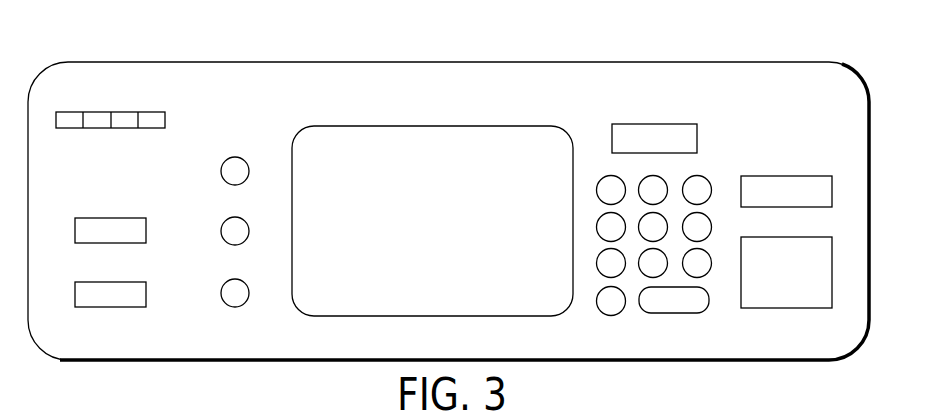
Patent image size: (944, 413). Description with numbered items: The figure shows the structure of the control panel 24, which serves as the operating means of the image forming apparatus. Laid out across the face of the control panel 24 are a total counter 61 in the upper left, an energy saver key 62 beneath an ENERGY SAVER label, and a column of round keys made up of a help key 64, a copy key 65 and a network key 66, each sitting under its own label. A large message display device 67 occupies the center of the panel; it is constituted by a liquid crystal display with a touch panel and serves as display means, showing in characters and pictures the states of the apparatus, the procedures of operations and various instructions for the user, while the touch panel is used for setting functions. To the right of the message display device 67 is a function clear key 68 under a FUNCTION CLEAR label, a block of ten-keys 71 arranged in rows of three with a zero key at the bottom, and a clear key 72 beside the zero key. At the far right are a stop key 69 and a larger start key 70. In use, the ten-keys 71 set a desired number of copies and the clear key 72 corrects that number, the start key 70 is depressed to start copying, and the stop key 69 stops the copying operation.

The control panel 24 is at (508, 61).
The total counter 61 is at (97, 112).
The energy saver key 62 is at (75, 232).
The help key 64 is at (249, 171).
The copy key 65 is at (249, 231).
The network key 66 is at (235, 307).
The message display device 67 is at (410, 133).
The function clear key 68 is at (697, 138).
The stop key 69 is at (810, 175).
The start key 70 is at (797, 308).
The ten-keys 71 is at (661, 210).
The clear key 72 is at (675, 313).